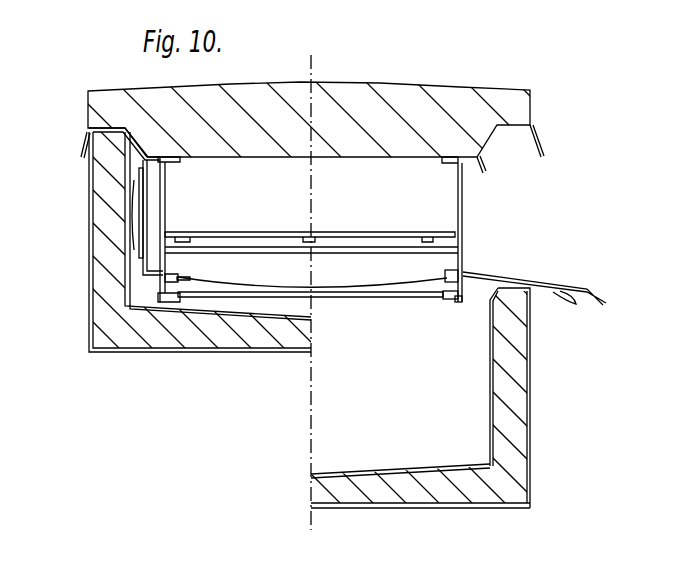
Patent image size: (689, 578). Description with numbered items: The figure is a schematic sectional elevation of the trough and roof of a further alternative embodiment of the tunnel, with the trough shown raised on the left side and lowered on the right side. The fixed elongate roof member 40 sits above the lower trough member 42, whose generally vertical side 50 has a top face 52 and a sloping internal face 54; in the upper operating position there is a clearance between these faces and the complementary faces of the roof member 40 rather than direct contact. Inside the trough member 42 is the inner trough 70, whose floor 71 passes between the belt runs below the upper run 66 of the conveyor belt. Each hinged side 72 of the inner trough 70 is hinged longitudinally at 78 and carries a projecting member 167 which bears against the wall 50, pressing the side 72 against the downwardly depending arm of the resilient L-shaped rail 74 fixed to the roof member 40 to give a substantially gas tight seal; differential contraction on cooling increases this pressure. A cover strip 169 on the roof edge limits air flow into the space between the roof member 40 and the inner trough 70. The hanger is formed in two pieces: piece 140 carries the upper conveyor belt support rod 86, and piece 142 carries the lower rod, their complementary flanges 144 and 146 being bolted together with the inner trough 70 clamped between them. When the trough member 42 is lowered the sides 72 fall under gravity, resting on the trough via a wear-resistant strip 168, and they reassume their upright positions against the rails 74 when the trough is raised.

The roof member 40 is at (383, 92).
The trough member 42 is at (534, 419).
The side of trough member 50 is at (531, 362).
The top face 52 is at (128, 136).
The sloping internal face 54 is at (108, 125).
The upper run of conveyor belt 66 is at (323, 232).
The inner trough 70 is at (300, 297).
The floor of sleeve 71 is at (283, 285).
The side of sleeve 72 is at (597, 296).
The rail 74 is at (484, 174).
The hinge 78 is at (143, 268).
The upper conveyor belt support rod 86 is at (460, 248).
The hanger piece 140 is at (462, 204).
The hanger piece 142 is at (456, 301).
The flange 144 is at (445, 272).
The flange 146 is at (448, 288).
The projecting member 167 is at (140, 180).
The wear-resistant strip 168 is at (140, 222).
The cover strip 169 is at (85, 138).